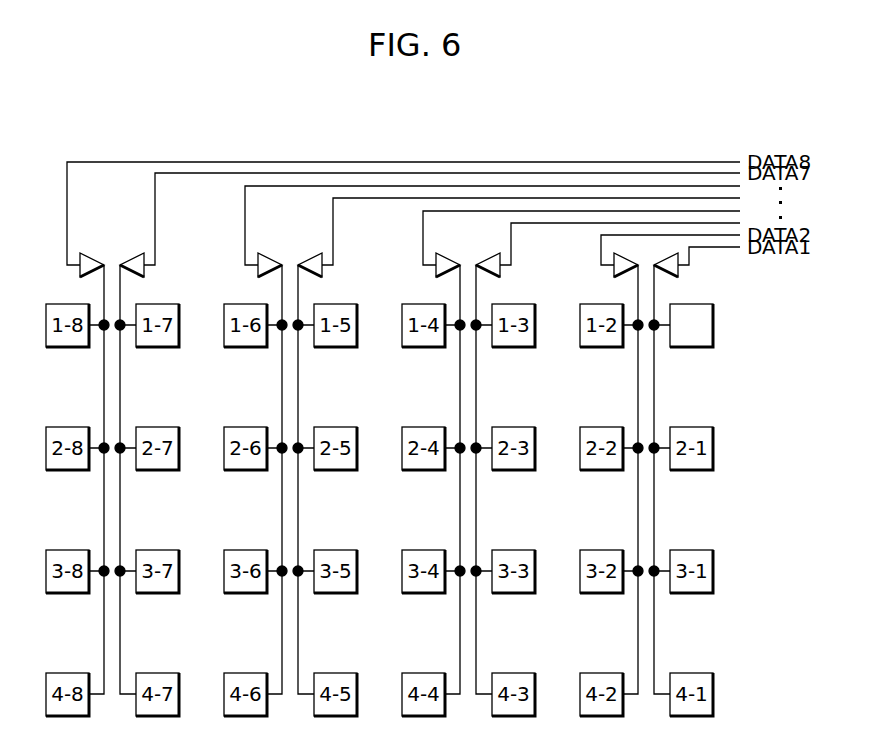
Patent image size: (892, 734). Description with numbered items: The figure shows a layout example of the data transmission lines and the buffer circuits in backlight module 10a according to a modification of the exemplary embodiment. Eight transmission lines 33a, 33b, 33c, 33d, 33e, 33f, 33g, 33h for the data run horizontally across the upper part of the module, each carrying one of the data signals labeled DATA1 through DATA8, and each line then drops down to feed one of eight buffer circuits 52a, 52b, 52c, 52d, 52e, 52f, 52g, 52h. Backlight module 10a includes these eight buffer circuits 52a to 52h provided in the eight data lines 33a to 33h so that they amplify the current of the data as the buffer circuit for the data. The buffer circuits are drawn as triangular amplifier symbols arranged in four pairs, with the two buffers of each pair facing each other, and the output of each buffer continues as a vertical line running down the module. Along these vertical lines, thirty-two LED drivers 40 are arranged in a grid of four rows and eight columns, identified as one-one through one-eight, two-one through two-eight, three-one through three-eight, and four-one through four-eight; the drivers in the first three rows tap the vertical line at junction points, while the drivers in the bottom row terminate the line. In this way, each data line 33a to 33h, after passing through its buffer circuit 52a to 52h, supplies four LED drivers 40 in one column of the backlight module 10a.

The backlight module 10a is at (114, 115).
The transmission line (data line) 33a is at (696, 249).
The transmission line (data line) 33b is at (613, 236).
The transmission line (data line) 33c is at (521, 224).
The transmission line (data line) 33d is at (435, 212).
The transmission line (data line) 33e is at (343, 199).
The transmission line (data line) 33f is at (257, 187).
The transmission line (data line) 33g is at (165, 174).
The transmission line (data line) 33h is at (79, 163).
The buffer circuit 52a is at (696, 283).
The buffer circuit 52b is at (614, 276).
The buffer circuit 52c is at (521, 283).
The buffer circuit 52d is at (436, 276).
The buffer circuit 52e is at (343, 283).
The buffer circuit 52f is at (258, 276).
The buffer circuit 52g is at (165, 283).
The buffer circuit 52h is at (80, 276).
The LED driver 40 is at (714, 324).